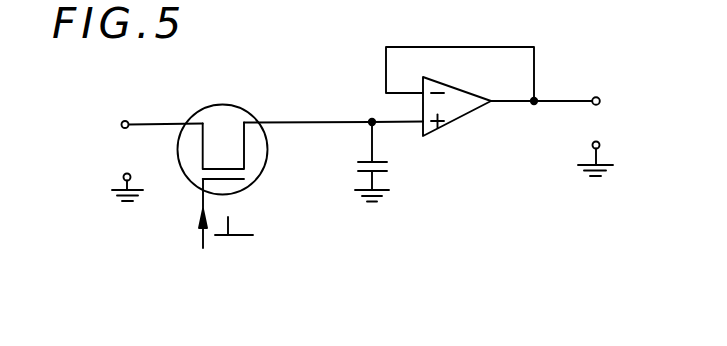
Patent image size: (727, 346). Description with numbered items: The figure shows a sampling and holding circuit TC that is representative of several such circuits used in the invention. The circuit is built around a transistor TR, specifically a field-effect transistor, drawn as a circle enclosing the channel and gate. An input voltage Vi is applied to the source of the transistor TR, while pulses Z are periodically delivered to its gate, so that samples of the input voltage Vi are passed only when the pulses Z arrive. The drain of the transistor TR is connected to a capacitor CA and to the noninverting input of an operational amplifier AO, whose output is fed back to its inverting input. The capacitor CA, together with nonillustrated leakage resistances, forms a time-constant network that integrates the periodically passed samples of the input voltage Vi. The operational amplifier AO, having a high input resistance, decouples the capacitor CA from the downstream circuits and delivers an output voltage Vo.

The transistor TR is at (223, 159).
The capacitor CA is at (348, 160).
The operational amplifier AO is at (489, 91).
The input voltage Vi is at (126, 161).
The output voltage Vo is at (597, 136).
The sampling and holding circuit TC is at (166, 214).
The pulses Z is at (234, 221).